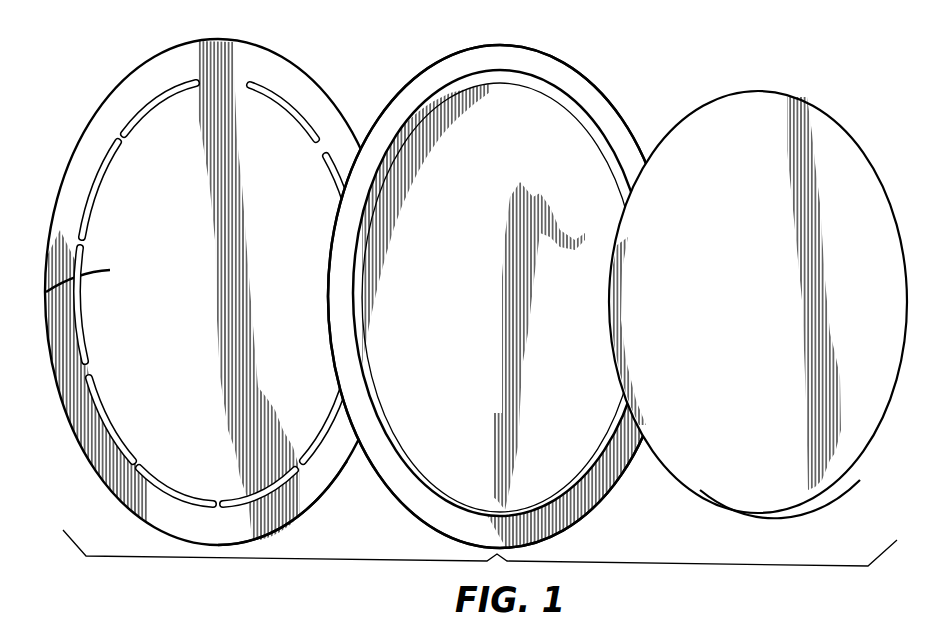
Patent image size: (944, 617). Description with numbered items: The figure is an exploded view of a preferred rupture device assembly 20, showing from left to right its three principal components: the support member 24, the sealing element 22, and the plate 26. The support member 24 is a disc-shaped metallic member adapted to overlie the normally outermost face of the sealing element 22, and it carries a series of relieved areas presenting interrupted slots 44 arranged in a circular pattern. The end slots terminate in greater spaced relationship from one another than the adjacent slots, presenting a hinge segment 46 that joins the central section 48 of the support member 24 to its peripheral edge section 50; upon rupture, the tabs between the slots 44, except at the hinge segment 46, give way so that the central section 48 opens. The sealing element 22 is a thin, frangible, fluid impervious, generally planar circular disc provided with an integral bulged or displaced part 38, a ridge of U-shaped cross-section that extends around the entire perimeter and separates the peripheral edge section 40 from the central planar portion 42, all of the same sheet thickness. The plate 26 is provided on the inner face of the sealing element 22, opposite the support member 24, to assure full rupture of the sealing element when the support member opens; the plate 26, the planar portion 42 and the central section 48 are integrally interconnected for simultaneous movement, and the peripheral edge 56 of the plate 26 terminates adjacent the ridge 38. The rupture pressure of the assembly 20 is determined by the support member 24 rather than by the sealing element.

The rupture device assembly 20 is at (440, 44).
The sealing element 22 is at (587, 524).
The support member 24 is at (312, 512).
The plate 26 is at (835, 491).
The bulged or displaced part 38 is at (593, 482).
The peripheral edge section 40 is at (443, 526).
The central planar portion 42 is at (468, 357).
The interrupted slots 44 is at (97, 397).
The hinge segment 46 is at (480, 573).
The central section 48 is at (198, 379).
The peripheral edge section 50 is at (151, 504).
The peripheral edge 56 is at (733, 92).